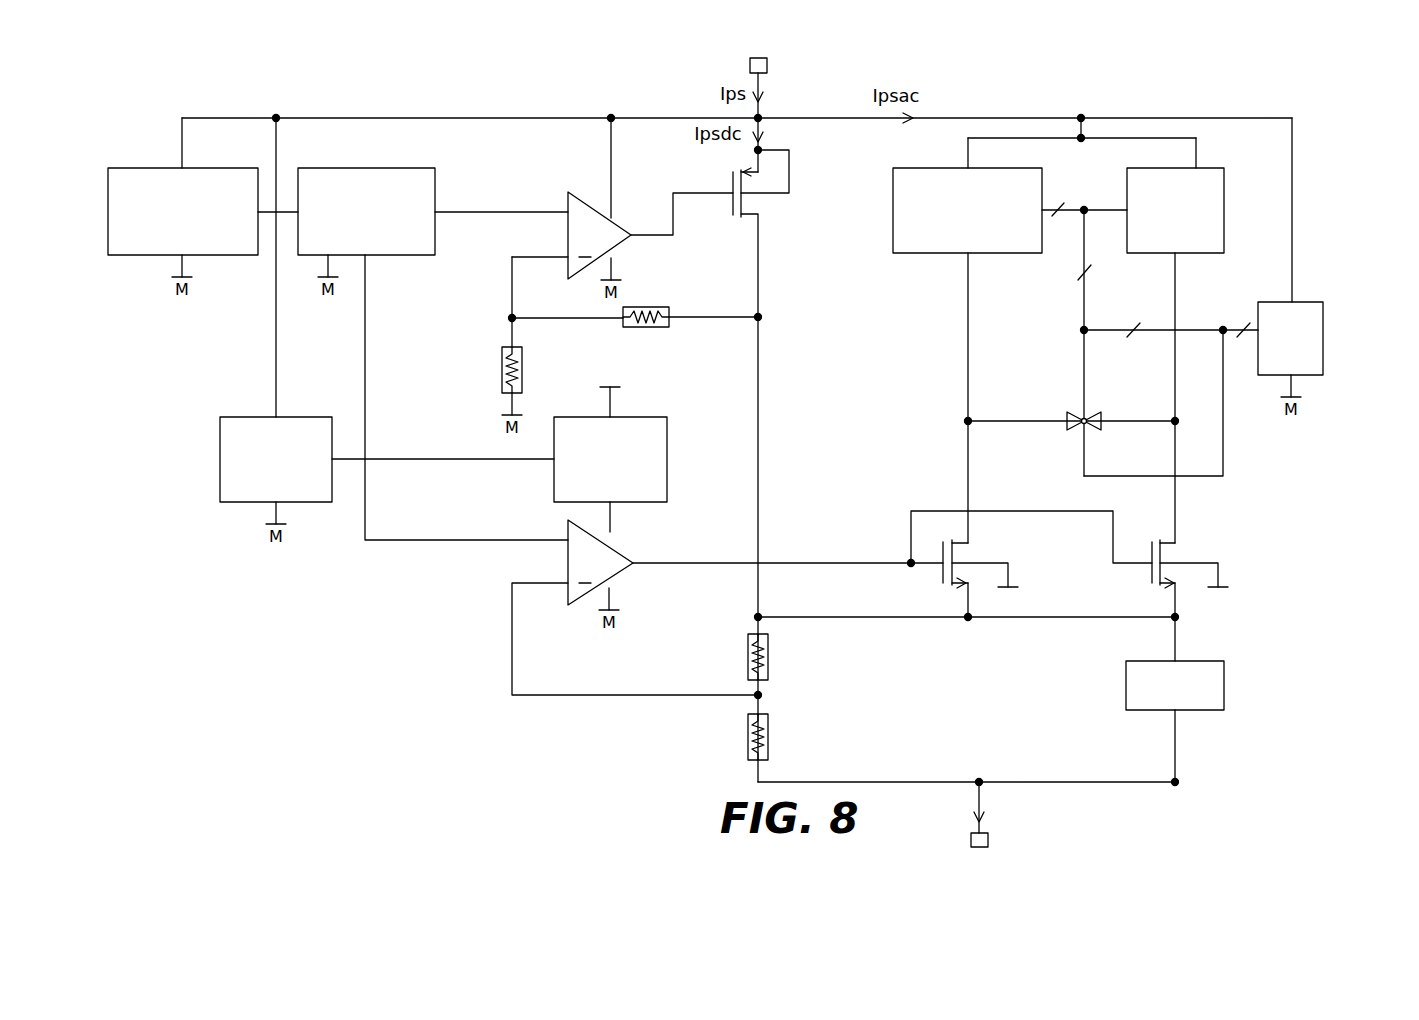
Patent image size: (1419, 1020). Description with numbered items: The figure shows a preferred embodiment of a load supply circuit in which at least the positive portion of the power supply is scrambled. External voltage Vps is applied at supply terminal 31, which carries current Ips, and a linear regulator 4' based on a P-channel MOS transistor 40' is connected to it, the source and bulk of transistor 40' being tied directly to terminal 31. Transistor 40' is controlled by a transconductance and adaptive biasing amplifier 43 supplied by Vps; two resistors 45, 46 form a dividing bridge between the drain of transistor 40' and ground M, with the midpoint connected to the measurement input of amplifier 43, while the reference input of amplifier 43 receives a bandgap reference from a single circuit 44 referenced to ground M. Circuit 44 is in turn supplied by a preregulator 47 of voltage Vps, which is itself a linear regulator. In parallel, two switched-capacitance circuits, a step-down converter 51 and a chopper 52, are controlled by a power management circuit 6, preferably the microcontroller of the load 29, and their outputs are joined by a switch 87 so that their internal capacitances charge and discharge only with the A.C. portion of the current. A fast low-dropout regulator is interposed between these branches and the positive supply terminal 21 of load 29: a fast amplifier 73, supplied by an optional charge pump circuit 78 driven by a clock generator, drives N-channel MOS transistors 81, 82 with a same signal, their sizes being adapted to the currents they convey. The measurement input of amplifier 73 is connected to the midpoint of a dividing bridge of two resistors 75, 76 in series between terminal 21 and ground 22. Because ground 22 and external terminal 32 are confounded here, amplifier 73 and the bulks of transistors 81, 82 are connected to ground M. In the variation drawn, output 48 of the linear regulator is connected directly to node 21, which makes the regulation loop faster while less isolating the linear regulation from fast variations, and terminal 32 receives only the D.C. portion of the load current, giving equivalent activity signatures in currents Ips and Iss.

The preregulator 47 is at (170, 168).
The reference voltage generation circuit 44 is at (440, 168).
The transconductance and adaptive biasing amplifier 43 is at (618, 222).
The P-channel MOS transistor 40' is at (730, 466).
The supply terminal 31 is at (767, 66).
The switched-capacitance circuit 51 is at (930, 168).
The switched-capacitance circuit 52 is at (1224, 168).
The control circuit 6 is at (1272, 302).
The switch 87 is at (1068, 412).
The resistor 45 is at (662, 330).
The resistor 46 is at (500, 378).
The linear regulator 4' is at (618, 371).
The charge pump circuit 78 is at (668, 432).
The output of the linear regulator 48 is at (758, 497).
The resistor 75 is at (243, 417).
The fast amplifier 73 is at (618, 572).
The resistor 76 is at (747, 750).
The N-channel MOS transistor 81 is at (958, 586).
The N-channel MOS transistor 82 is at (1168, 586).
The positive supply terminal 21 is at (1172, 622).
The load 29 is at (1224, 661).
The ground terminal 22 is at (1178, 784).
The ground terminal 32 is at (988, 833).